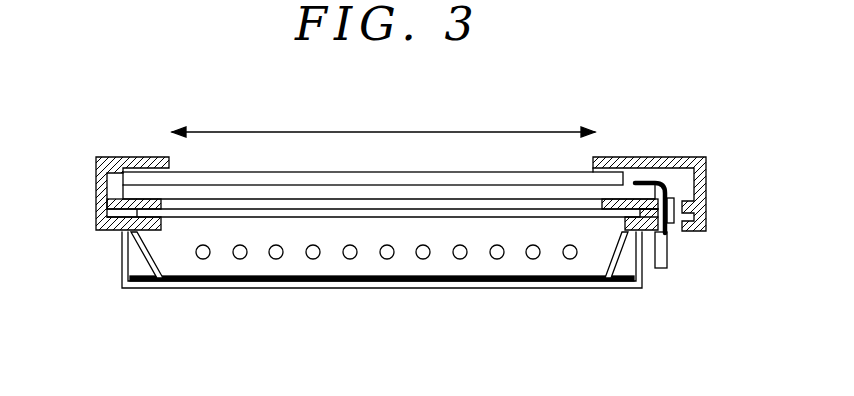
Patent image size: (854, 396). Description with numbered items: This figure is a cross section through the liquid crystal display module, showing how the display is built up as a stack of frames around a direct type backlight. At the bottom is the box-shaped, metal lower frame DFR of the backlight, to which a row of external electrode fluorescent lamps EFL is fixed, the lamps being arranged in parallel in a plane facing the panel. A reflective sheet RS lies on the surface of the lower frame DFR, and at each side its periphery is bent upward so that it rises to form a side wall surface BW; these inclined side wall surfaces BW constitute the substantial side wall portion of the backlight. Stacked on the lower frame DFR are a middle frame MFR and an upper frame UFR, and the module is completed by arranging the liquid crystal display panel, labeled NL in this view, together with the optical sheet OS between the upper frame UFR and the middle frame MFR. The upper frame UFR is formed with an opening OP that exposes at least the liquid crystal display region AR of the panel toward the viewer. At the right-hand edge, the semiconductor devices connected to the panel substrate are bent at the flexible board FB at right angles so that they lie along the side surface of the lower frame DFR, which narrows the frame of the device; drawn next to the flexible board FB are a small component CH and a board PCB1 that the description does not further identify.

The upper frame UFR is at (133, 157).
The middle frame MFR is at (112, 230).
The lower frame DFR is at (281, 289).
The display panel NL is at (305, 172).
The optical sheet OS is at (444, 215).
The liquid crystal display region AR is at (383, 120).
The opening OP is at (592, 166).
The flexible board FB is at (653, 180).
The connector CH is at (676, 207).
The printed circuit board PCB1 is at (668, 260).
The reflective sheet RS is at (374, 276).
The side wall surface BW is at (151, 262).
The external electrode fluorescent lamp EFL is at (536, 262).